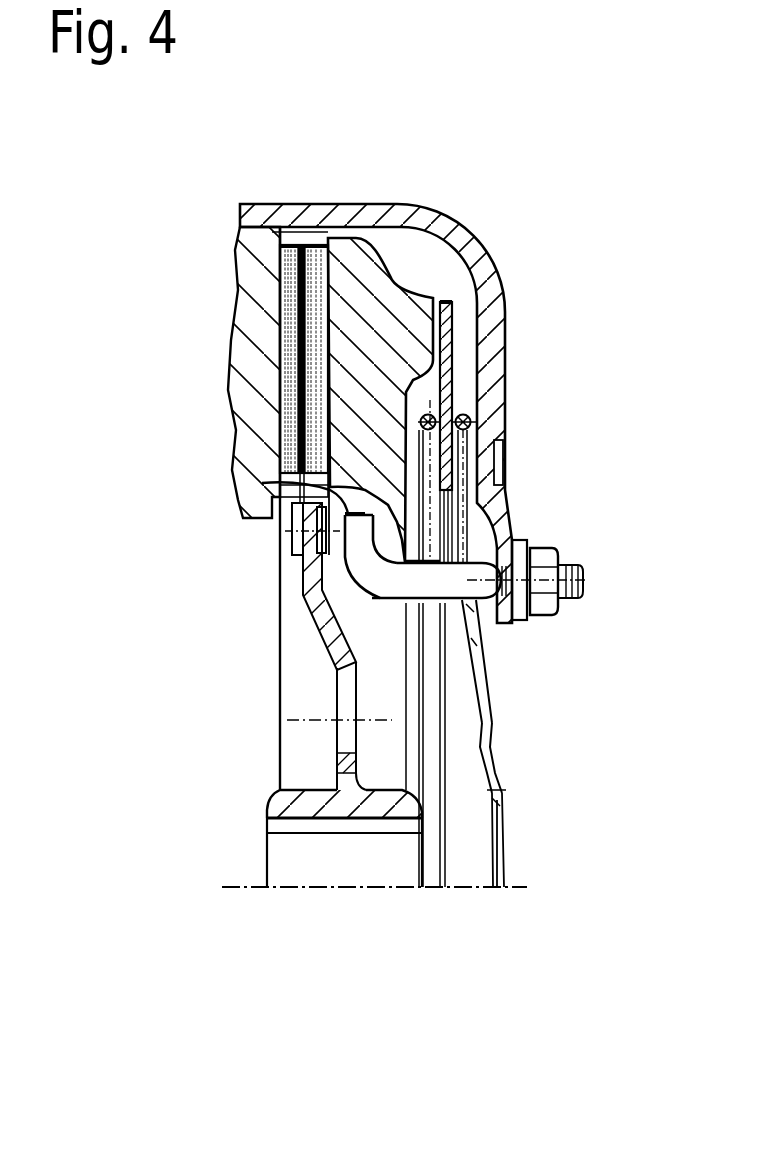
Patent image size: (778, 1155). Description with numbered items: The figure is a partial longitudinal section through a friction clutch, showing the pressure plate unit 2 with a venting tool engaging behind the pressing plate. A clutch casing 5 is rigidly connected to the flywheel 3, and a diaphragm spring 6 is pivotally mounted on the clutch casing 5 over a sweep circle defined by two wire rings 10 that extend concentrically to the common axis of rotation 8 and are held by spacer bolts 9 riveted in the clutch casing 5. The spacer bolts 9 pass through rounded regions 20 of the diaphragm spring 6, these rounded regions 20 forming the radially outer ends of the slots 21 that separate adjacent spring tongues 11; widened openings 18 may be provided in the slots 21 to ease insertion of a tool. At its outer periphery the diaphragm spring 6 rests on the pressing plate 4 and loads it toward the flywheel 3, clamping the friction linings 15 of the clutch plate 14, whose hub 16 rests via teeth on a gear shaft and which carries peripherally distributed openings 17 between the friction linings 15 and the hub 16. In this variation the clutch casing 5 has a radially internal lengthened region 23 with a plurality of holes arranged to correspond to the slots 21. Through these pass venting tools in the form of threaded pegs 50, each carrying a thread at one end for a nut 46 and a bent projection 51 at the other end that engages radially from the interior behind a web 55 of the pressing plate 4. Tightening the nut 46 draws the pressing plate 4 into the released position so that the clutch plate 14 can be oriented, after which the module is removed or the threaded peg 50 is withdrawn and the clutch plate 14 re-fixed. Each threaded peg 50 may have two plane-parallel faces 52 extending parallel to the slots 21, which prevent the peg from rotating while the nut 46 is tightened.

The pressure plate unit 2 is at (530, 198).
The flywheel 3 is at (245, 266).
The pressing plate 4 is at (383, 293).
The clutch casing 5 is at (455, 250).
The diaphragm spring 6 is at (450, 365).
The axis of rotation 8 is at (238, 890).
The spacer bolts 9 is at (497, 458).
The wire rings 10 is at (470, 418).
The spring tongues 11 is at (497, 790).
The clutch plate 14 is at (310, 587).
The friction linings 15 is at (313, 254).
The hub 16 is at (293, 803).
The openings 17 is at (343, 683).
The openings 18 is at (488, 722).
The rounded regions 20 is at (447, 472).
The slots 21 is at (477, 625).
The lengthened region 23 is at (505, 545).
The nut 46 is at (547, 588).
The threaded peg 50 is at (411, 608).
The bent projection 51 is at (305, 533).
The plane-parallel faces 52 is at (364, 568).
The web 55 is at (262, 485).